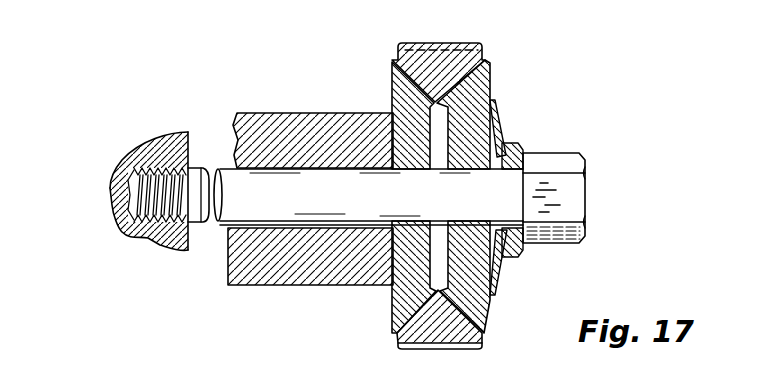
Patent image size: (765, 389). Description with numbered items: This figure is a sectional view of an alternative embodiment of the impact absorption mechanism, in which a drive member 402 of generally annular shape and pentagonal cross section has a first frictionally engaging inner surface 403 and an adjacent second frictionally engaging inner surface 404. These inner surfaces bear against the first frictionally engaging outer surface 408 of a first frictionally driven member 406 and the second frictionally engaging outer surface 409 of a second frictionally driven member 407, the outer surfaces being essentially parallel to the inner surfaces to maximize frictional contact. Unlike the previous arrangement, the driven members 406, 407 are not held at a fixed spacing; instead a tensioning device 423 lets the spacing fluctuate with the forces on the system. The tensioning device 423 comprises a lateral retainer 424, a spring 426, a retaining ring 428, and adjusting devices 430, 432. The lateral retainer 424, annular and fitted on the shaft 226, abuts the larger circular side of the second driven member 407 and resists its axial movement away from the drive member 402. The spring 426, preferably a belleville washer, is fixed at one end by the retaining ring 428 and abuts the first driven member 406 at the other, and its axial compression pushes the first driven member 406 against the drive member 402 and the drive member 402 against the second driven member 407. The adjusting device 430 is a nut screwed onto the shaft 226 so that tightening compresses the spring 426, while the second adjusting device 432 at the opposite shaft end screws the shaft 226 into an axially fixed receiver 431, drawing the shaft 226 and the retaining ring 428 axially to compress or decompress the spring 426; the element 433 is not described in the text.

The shaft 226 is at (345, 208).
The drive member 402 is at (460, 43).
The first frictionally engaging inner surface 403 is at (487, 72).
The second frictionally engaging inner surface 404 is at (405, 70).
The first frictionally driven member 406 is at (470, 304).
The second frictionally driven member 407 is at (390, 298).
The first frictionally engaging outer surface 408 is at (468, 338).
The second frictionally engaging outer surface 409 is at (410, 340).
The tensioning device 423 is at (601, 89).
The lateral retainer 424 is at (300, 123).
The spring 426 is at (498, 115).
The retaining ring 428 is at (515, 152).
The adjusting device 430 is at (555, 200).
The axially fixed receiver 431 is at (165, 140).
The second adjusting device 432 is at (106, 185).
The lock nut base 433 is at (160, 240).